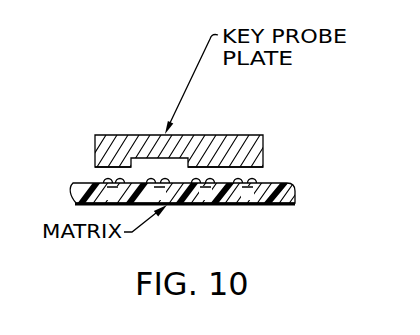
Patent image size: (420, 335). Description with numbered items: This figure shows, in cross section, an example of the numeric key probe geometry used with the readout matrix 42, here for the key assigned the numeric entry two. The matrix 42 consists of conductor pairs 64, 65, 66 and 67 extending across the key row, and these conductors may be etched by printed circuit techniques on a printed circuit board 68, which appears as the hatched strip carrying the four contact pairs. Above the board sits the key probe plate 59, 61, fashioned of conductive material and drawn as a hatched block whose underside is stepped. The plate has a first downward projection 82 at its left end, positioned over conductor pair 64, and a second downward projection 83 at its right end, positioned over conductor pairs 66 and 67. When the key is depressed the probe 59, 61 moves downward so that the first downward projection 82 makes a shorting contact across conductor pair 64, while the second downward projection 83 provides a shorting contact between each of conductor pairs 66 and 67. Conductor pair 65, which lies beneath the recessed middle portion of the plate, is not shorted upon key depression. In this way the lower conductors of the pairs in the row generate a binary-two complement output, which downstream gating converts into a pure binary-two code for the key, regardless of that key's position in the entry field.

The matrix 42 is at (215, 198).
The probe 59 is at (214, 138).
The probe 61 is at (262, 145).
The conductor pair 64 is at (145, 146).
The conductor pair 65 is at (160, 177).
The conductor pair 66 is at (207, 177).
The conductor pair 67 is at (248, 177).
The printed circuit board 68 is at (267, 205).
The first downward projection 82 is at (103, 168).
The second downward projection 83 is at (264, 169).